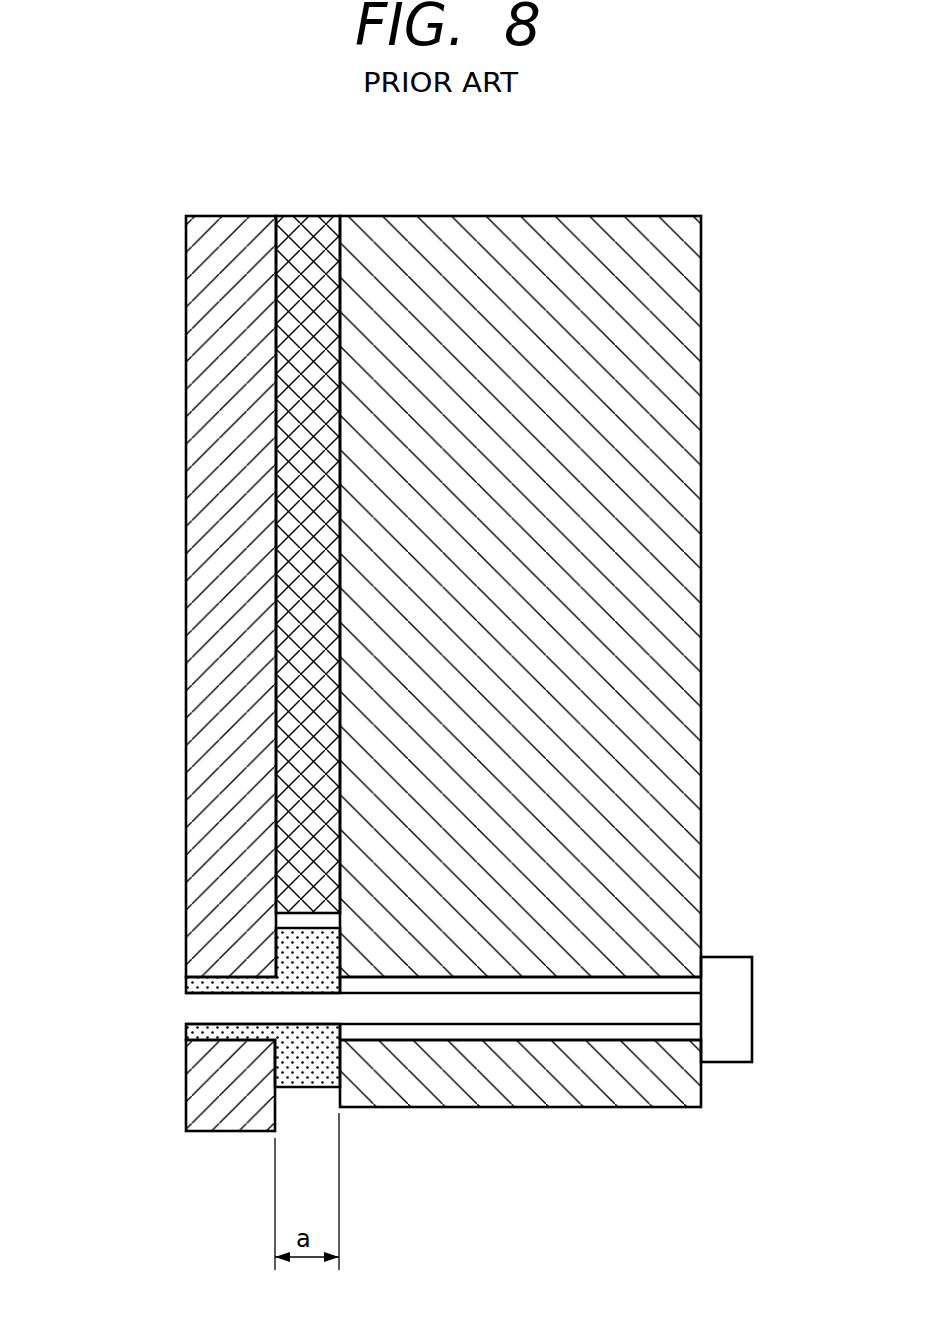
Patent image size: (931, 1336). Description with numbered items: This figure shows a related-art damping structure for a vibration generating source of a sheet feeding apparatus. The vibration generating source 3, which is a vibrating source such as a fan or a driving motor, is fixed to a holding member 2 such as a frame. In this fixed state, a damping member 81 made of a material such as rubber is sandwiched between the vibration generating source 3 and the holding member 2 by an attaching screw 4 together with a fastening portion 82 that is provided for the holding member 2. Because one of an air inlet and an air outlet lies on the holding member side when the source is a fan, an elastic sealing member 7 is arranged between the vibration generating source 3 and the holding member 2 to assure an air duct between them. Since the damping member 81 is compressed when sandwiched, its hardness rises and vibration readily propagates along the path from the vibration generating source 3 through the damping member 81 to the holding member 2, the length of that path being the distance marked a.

The holding member 2 is at (203, 350).
The vibration generating source 3 is at (677, 528).
The sealing member 7 is at (309, 236).
The damping member 81 is at (313, 1083).
The fastening portion 82 is at (237, 973).
The attaching screw 4 is at (733, 1012).